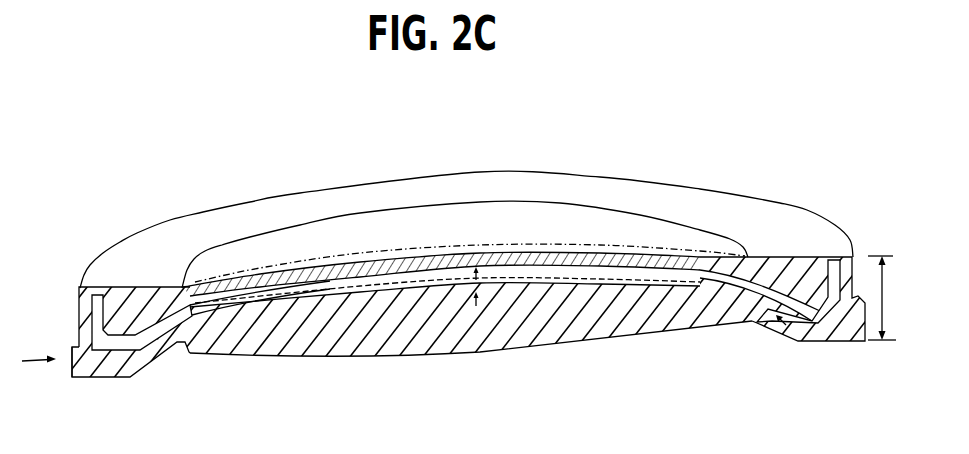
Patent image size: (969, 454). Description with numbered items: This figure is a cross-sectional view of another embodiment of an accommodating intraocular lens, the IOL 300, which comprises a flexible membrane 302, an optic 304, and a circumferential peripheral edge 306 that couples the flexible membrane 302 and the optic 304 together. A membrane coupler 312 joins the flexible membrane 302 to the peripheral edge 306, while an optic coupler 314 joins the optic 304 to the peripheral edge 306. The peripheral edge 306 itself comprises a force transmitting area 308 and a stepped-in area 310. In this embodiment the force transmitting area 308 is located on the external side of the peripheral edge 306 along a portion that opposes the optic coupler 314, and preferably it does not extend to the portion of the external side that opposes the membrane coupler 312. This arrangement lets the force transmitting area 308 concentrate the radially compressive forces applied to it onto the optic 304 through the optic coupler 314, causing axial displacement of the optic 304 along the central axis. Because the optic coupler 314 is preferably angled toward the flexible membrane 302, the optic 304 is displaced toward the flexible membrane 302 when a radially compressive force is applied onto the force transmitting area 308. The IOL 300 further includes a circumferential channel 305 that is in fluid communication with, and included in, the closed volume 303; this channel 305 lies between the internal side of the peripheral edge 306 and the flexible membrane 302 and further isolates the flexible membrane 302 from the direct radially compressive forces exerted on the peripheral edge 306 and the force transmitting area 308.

The IOL 300 is at (172, 162).
The flexible membrane 302 is at (563, 218).
The closed volume 303 is at (417, 281).
The optic 304 is at (542, 348).
The circumferential channel 305 is at (98, 327).
The circumferential peripheral edge 306 is at (932, 327).
The force transmitting area 308 is at (68, 363).
The stepped-in area 310 is at (78, 312).
The membrane coupler 312 is at (798, 228).
The optic coupler 314 is at (143, 358).